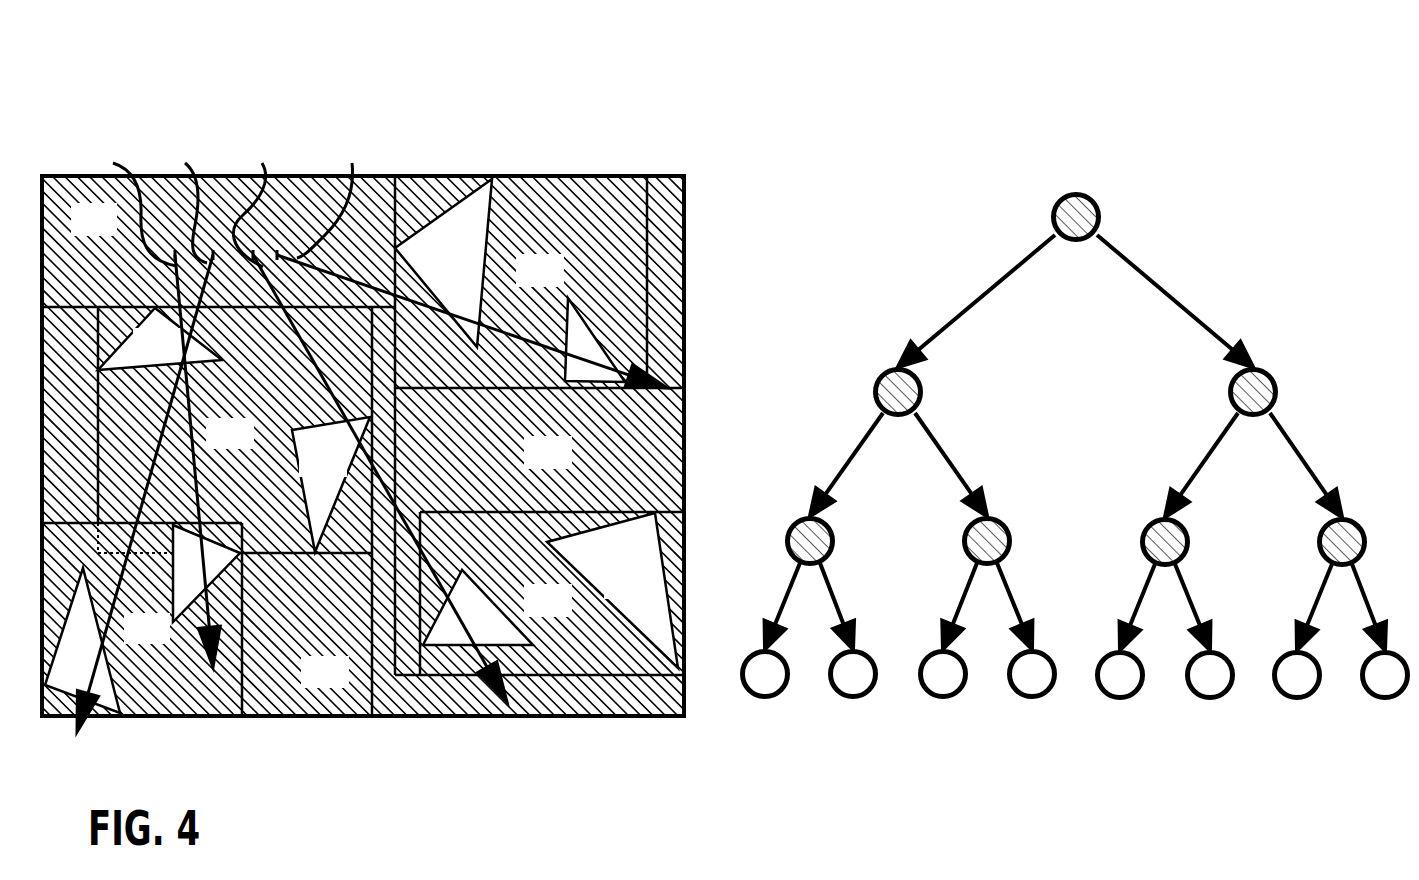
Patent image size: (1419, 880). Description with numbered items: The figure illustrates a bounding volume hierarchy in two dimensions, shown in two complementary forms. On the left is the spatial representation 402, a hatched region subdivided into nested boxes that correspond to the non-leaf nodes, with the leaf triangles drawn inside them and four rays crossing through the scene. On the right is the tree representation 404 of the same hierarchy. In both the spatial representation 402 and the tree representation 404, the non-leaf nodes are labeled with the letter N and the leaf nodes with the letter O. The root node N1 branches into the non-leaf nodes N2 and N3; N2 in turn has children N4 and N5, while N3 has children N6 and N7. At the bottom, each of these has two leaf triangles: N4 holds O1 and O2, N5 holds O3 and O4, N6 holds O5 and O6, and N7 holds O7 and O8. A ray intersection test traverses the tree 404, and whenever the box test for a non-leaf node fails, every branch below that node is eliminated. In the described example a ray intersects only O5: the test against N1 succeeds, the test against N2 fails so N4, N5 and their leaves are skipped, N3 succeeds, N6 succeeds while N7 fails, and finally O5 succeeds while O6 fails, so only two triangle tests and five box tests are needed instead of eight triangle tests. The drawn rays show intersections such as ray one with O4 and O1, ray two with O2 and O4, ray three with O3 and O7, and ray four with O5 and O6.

The spatial representation 402 is at (243, 94).
The tree representation 404 is at (849, 124).
The root non-leaf node N1 is at (1076, 198).
The non-leaf node N2 is at (929, 393).
The non-leaf node N3 is at (1221, 393).
The non-leaf node N4 is at (834, 541).
The non-leaf node N5 is at (961, 541).
The non-leaf node N6 is at (1188, 542).
The non-leaf node N7 is at (1317, 542).
The leaf node triangle O1 is at (765, 699).
The leaf node triangle O2 is at (853, 699).
The leaf node triangle O3 is at (943, 699).
The leaf node triangle O4 is at (1032, 699).
The leaf node triangle O5 is at (1120, 700).
The leaf node triangle O6 is at (1210, 700).
The leaf node triangle O7 is at (1297, 700).
The leaf node triangle O8 is at (1385, 700).